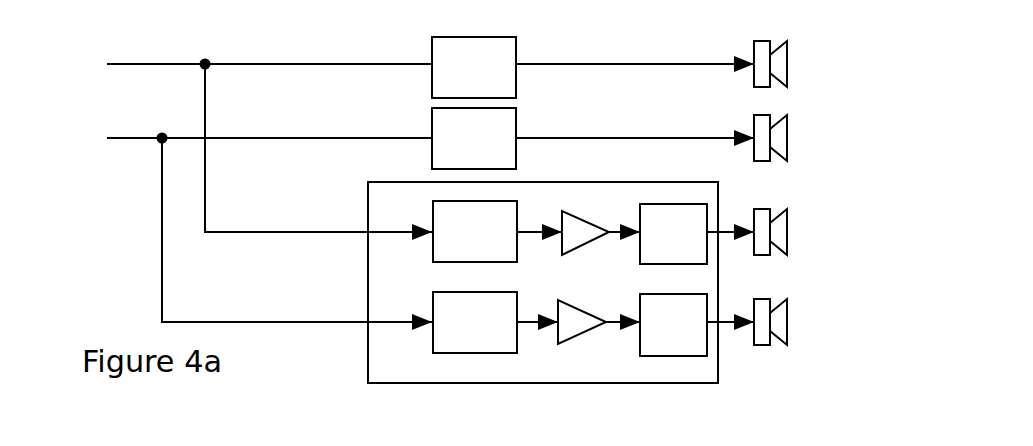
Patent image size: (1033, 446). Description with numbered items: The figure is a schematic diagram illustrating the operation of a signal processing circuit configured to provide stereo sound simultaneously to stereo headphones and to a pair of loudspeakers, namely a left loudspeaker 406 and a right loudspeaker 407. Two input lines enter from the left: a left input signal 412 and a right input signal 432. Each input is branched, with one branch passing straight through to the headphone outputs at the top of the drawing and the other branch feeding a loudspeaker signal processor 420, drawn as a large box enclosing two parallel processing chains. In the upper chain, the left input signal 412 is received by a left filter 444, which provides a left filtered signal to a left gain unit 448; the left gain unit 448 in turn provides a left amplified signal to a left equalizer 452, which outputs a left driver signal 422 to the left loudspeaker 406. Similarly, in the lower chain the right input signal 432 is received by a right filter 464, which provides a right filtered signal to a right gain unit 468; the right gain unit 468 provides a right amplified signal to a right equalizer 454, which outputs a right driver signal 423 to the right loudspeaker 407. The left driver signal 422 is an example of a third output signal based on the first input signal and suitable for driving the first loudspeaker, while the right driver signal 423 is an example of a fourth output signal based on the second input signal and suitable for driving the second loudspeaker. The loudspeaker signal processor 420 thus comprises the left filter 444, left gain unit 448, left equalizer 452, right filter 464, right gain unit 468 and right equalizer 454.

The left input signal 412 is at (203, 118).
The right input signal 432 is at (162, 258).
The loudspeaker signal processor 420 is at (402, 383).
The left filter 444 is at (473, 262).
The right filter 464 is at (462, 353).
The left gain unit 448 is at (585, 245).
The right gain unit 468 is at (563, 342).
The left equalizer 452 is at (673, 264).
The right equalizer 454 is at (658, 356).
The left driver signal 422 is at (738, 237).
The right driver signal 423 is at (738, 330).
The left loudspeaker 406 is at (785, 230).
The right loudspeaker 407 is at (785, 318).